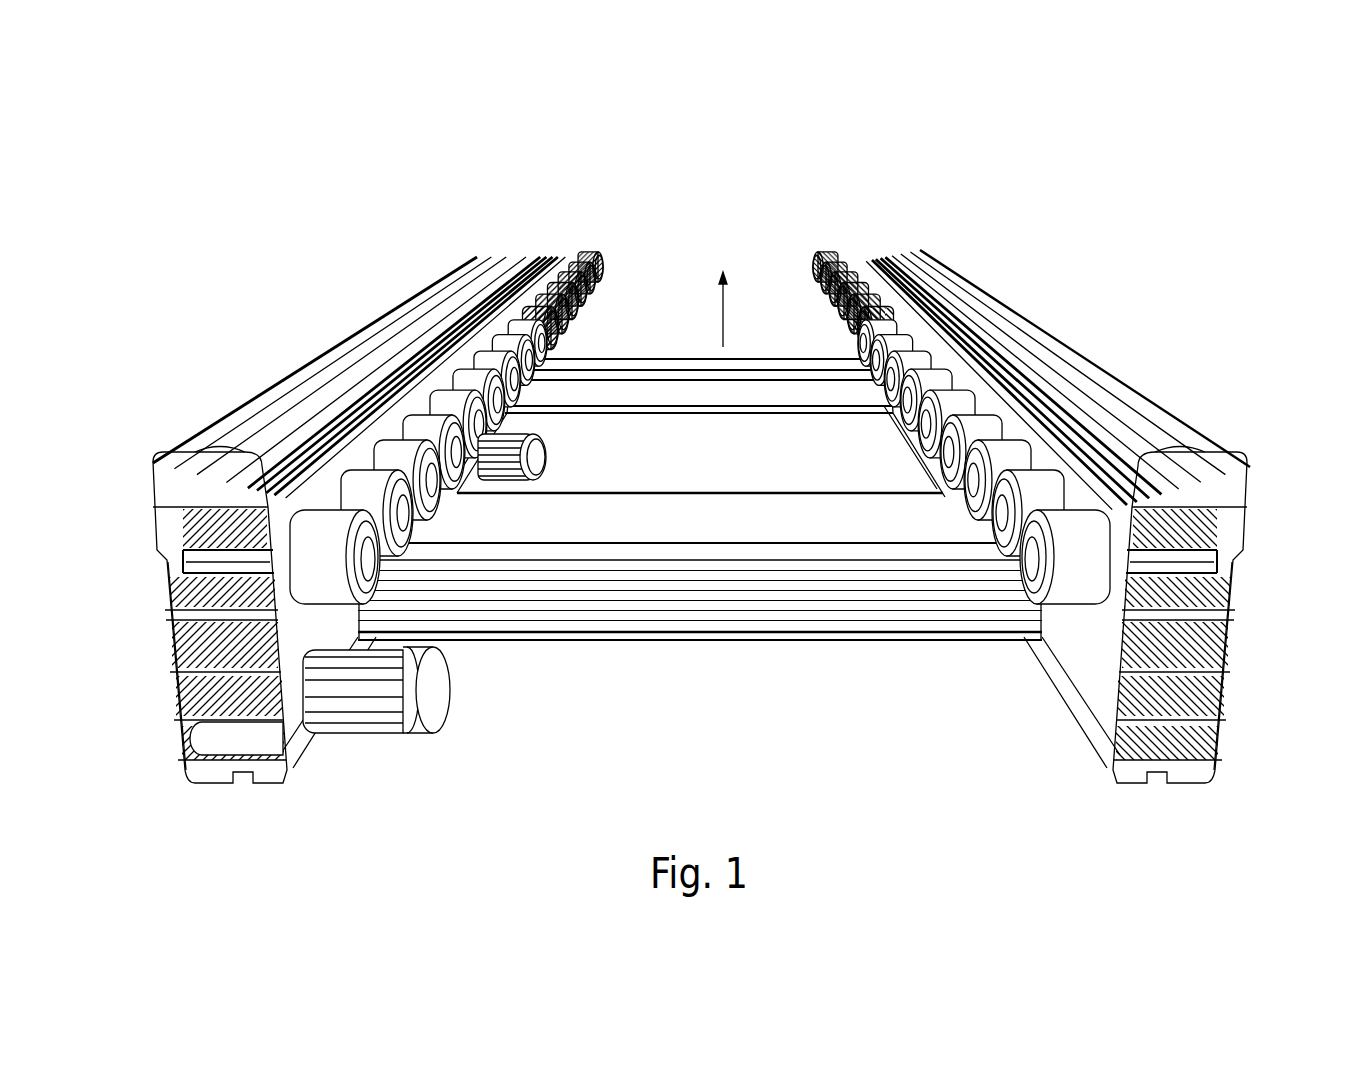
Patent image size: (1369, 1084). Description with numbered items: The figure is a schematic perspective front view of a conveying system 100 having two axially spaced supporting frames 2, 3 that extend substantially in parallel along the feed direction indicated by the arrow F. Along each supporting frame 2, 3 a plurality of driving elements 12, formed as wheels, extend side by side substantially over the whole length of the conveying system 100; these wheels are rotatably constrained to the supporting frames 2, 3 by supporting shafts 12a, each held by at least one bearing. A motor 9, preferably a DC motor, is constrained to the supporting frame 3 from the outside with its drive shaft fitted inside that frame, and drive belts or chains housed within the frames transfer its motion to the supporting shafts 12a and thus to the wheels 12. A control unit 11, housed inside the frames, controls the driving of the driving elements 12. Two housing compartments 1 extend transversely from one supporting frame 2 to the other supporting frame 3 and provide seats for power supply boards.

The conveying system 100 is at (701, 465).
The housing compartment 1 is at (667, 352).
The supporting frame 2 is at (1086, 352).
The supporting frame 3 is at (321, 352).
The motor 9 is at (556, 455).
The control unit 11 is at (227, 738).
The driving elements 12 is at (328, 540).
The supporting shaft 12a is at (222, 549).